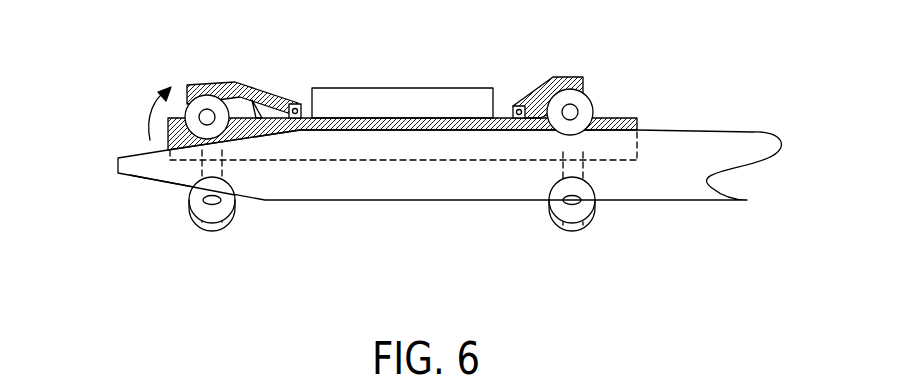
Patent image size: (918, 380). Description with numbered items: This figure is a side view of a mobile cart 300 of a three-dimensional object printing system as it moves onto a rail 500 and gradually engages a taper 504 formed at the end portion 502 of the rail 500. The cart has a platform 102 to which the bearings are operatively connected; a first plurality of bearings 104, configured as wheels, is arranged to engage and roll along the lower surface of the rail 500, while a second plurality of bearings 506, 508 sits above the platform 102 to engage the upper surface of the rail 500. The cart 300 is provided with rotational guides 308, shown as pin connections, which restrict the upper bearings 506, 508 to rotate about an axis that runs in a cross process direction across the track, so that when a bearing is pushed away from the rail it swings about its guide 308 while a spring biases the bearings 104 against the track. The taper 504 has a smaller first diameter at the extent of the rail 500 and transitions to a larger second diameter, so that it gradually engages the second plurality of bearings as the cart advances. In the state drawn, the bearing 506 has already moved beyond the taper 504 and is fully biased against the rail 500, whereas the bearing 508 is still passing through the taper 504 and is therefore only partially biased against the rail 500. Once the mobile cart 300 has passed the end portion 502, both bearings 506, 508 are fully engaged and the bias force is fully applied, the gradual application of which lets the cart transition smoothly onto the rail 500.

The platform 102 is at (380, 118).
The first plurality of bearings 104 is at (234, 216).
The mobile cart 300 is at (378, 213).
The rotational guides 308 is at (299, 118).
The rail 500 is at (713, 132).
The end portion 502 is at (131, 192).
The taper 504 is at (140, 155).
The bearing 506 is at (592, 98).
The bearing 508 is at (204, 84).